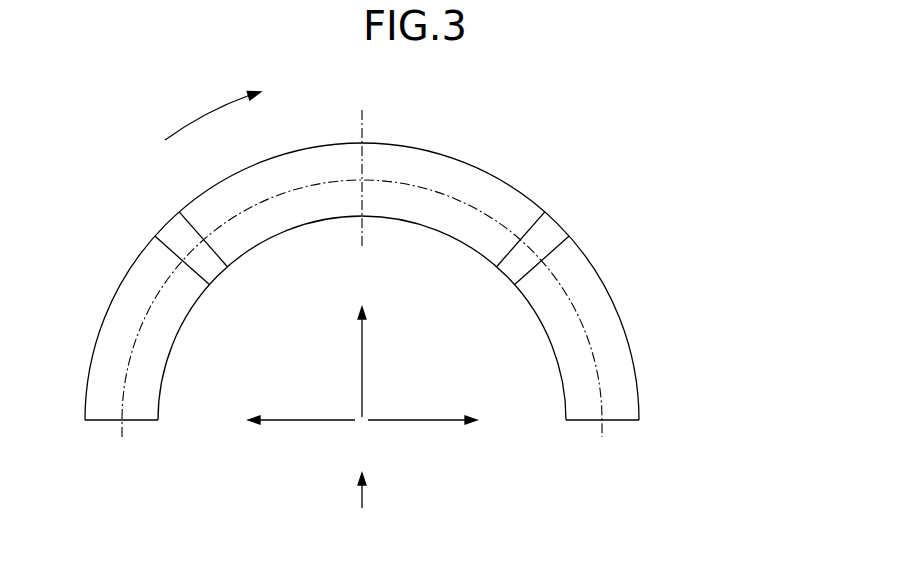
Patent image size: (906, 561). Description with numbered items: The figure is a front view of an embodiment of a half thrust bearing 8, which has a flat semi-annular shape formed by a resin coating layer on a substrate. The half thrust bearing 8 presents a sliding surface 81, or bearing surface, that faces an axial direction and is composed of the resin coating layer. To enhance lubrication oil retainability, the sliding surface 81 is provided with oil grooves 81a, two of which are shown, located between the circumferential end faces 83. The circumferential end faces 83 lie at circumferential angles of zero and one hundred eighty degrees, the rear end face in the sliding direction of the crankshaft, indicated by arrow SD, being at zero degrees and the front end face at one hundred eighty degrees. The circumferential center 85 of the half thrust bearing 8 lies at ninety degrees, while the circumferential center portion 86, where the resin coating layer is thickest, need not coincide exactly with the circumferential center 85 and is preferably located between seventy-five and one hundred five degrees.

The half thrust bearing 8 is at (670, 302).
The sliding surface 81 is at (482, 190).
The oil groove 81a is at (180, 235).
The circumferential end faces 83 is at (142, 420).
The circumferential center 85 is at (362, 128).
The circumferential center portion 86 is at (362, 170).